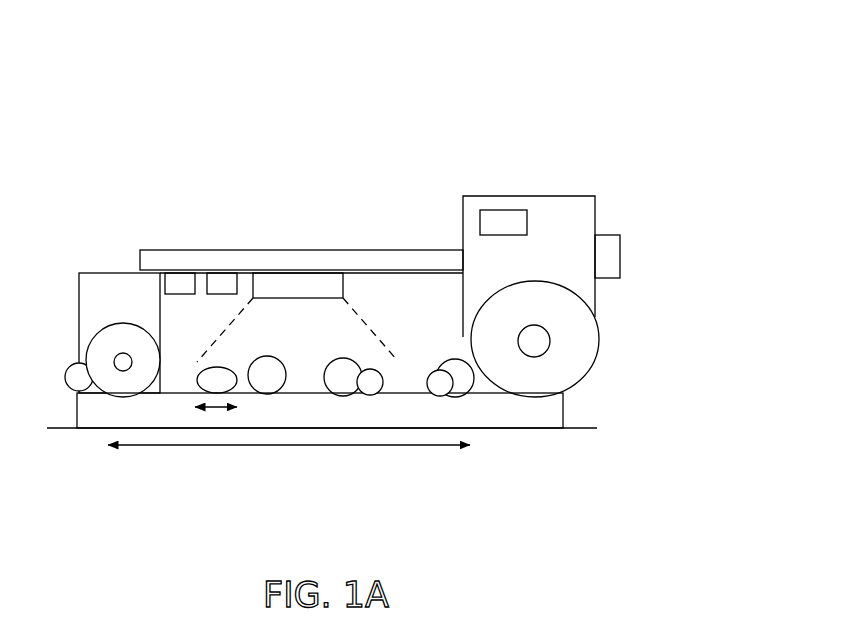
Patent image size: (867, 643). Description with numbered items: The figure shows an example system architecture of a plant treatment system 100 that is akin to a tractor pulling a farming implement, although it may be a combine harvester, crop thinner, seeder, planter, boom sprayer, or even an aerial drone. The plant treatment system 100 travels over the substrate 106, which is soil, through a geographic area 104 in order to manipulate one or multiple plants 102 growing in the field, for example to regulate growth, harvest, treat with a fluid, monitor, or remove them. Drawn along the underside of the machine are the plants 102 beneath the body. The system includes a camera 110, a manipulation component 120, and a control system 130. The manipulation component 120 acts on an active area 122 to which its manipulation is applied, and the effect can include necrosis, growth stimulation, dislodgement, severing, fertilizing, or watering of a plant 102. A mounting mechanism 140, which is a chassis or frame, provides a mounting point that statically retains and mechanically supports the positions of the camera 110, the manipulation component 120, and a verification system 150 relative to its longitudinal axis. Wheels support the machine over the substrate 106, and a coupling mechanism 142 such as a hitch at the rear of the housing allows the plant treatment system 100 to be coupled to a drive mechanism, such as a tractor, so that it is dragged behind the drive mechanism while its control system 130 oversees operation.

The plant treatment system 100 is at (247, 112).
The plants 102 is at (360, 400).
The geographic area 104 is at (388, 450).
The substrate 106 is at (432, 410).
The camera 110 is at (305, 287).
The manipulation component 120 is at (222, 278).
The active area 122 is at (210, 423).
The control system 130 is at (512, 215).
The mounting mechanism 140 is at (395, 262).
The coupling mechanism 142 is at (613, 260).
The verification system 150 is at (180, 280).